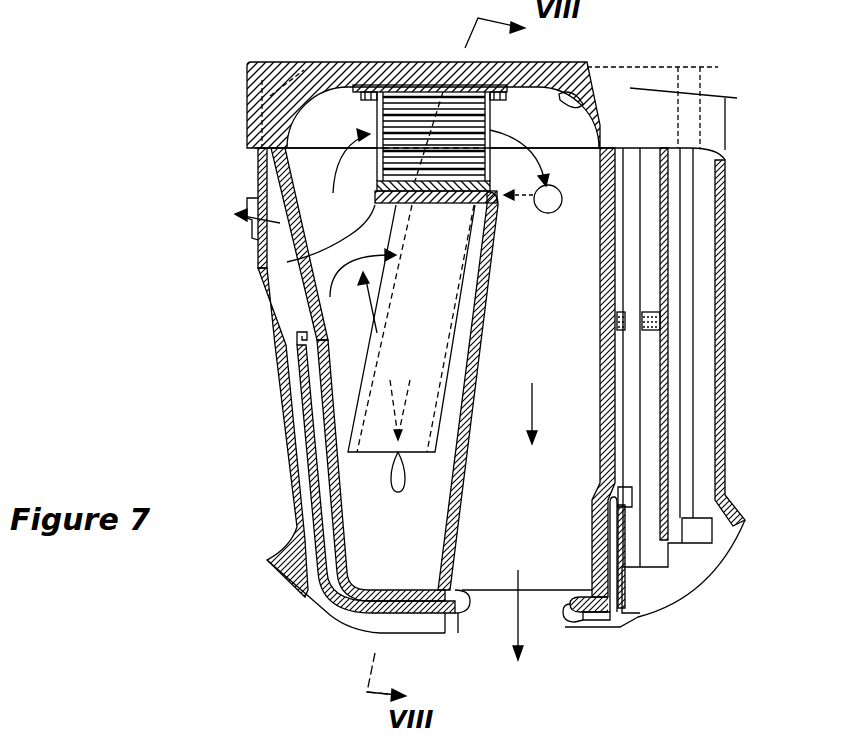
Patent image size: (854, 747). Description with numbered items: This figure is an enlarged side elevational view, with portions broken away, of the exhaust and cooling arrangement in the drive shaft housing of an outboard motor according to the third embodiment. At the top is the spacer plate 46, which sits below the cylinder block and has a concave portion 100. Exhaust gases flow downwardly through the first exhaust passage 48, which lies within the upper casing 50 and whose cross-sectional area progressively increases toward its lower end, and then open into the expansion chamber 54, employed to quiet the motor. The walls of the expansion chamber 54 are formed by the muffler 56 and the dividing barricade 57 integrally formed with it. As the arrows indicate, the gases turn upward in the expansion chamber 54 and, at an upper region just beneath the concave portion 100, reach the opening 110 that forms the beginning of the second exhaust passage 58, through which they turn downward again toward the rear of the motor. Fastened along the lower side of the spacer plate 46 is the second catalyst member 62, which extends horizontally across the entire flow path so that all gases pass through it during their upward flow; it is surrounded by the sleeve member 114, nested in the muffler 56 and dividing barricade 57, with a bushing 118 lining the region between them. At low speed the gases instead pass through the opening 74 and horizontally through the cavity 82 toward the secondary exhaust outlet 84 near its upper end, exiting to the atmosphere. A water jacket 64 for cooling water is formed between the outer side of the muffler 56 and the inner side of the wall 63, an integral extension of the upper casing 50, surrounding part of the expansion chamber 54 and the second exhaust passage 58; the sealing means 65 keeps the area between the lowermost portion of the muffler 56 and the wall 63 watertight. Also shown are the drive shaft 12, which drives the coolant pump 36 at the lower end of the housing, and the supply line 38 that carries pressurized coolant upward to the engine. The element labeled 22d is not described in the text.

The spacer plate 46 is at (540, 66).
The concave portion 100 is at (592, 108).
The upper casing 50 is at (724, 247).
The drive shaft 12 is at (700, 312).
The supply line 38 is at (637, 357).
The coolant pump 36 is at (703, 548).
The second exhaust passage 58 is at (575, 538).
The sealing means 65 is at (577, 624).
The opening 110 is at (365, 127).
The sleeve member 114 is at (397, 85).
The second catalyst member 62 is at (506, 98).
The bushing 118 is at (437, 203).
The opening 74 is at (548, 214).
The dividing barricade 57 is at (472, 420).
The cavity 82 is at (275, 188).
The secondary exhaust outlet 84 is at (247, 200).
The conical wall 22d is at (303, 255).
The muffler 56 is at (318, 276).
The wall 63 is at (307, 388).
The water jacket 64 is at (322, 463).
The expansion chamber 54 is at (365, 588).
The first exhaust passage 48 is at (297, 340).